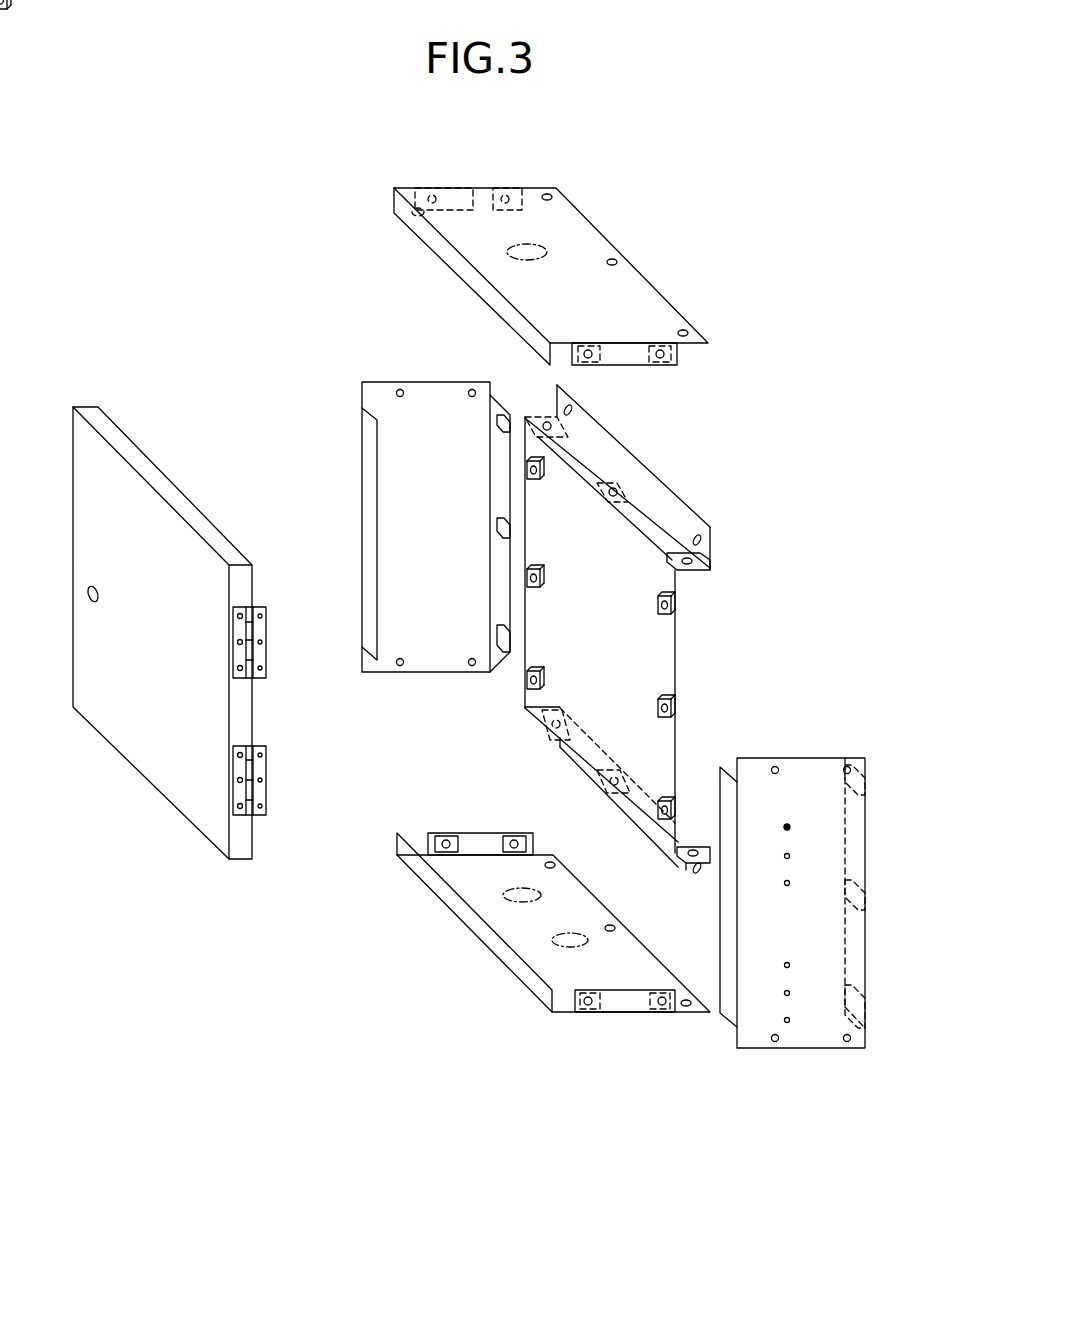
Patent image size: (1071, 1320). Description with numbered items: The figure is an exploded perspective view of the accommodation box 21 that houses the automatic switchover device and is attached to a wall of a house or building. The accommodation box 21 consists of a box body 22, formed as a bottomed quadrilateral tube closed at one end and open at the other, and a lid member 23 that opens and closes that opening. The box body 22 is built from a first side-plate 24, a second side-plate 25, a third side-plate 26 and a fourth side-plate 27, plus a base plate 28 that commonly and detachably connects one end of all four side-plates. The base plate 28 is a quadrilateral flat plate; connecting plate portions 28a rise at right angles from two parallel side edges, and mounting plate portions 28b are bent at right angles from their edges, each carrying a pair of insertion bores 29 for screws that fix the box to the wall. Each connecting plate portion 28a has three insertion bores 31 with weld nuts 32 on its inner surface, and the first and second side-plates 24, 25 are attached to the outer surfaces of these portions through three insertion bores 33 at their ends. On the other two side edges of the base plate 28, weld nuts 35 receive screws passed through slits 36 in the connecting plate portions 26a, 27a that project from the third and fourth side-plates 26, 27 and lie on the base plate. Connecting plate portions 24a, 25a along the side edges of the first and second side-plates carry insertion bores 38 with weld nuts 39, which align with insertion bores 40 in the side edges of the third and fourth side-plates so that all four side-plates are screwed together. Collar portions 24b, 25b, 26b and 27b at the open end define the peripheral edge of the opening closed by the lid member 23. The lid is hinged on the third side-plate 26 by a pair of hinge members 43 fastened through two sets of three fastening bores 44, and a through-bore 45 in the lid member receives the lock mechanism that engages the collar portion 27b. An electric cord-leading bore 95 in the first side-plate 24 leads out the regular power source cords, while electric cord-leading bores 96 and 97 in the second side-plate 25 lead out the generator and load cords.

The accommodation box 21 is at (388, 1046).
The box body 22 is at (440, 923).
The lid member 23 is at (213, 826).
The first side-plate 24 is at (638, 310).
The connecting plate portion 24a is at (457, 207).
The collar portion 24b is at (440, 257).
The second side-plate 25 is at (500, 912).
The connecting plate portion 25a is at (480, 838).
The collar portion 25b is at (503, 962).
The third side-plate 26 is at (825, 867).
The connecting plate portion 26a is at (858, 860).
The collar portion 26b is at (730, 997).
The fourth side-plate 27 is at (387, 471).
The connecting plate portion 27a is at (503, 575).
The collar portion 27b is at (370, 445).
The base plate 28 is at (525, 667).
The connecting plate portion 28a is at (637, 510).
The mounting plate portion 28b is at (678, 515).
The insertion bore 29 is at (573, 408).
The insertion bore 31 is at (547, 418).
The weld nut 32 is at (700, 573).
The insertion bore 33 is at (612, 259).
The weld nut 35 is at (530, 480).
The slit 36 is at (500, 420).
The insertion bore 38 is at (650, 353).
The weld nut 39 is at (530, 190).
The insertion bore 40 is at (472, 390).
The hinge member 43 is at (237, 766).
The fastening bore 44 is at (790, 883).
The through-bore 45 is at (97, 587).
The electric cord-leading bore 95 is at (520, 246).
The electric cord-leading bore 96 is at (543, 895).
The electric cord-leading bore 97 is at (586, 950).